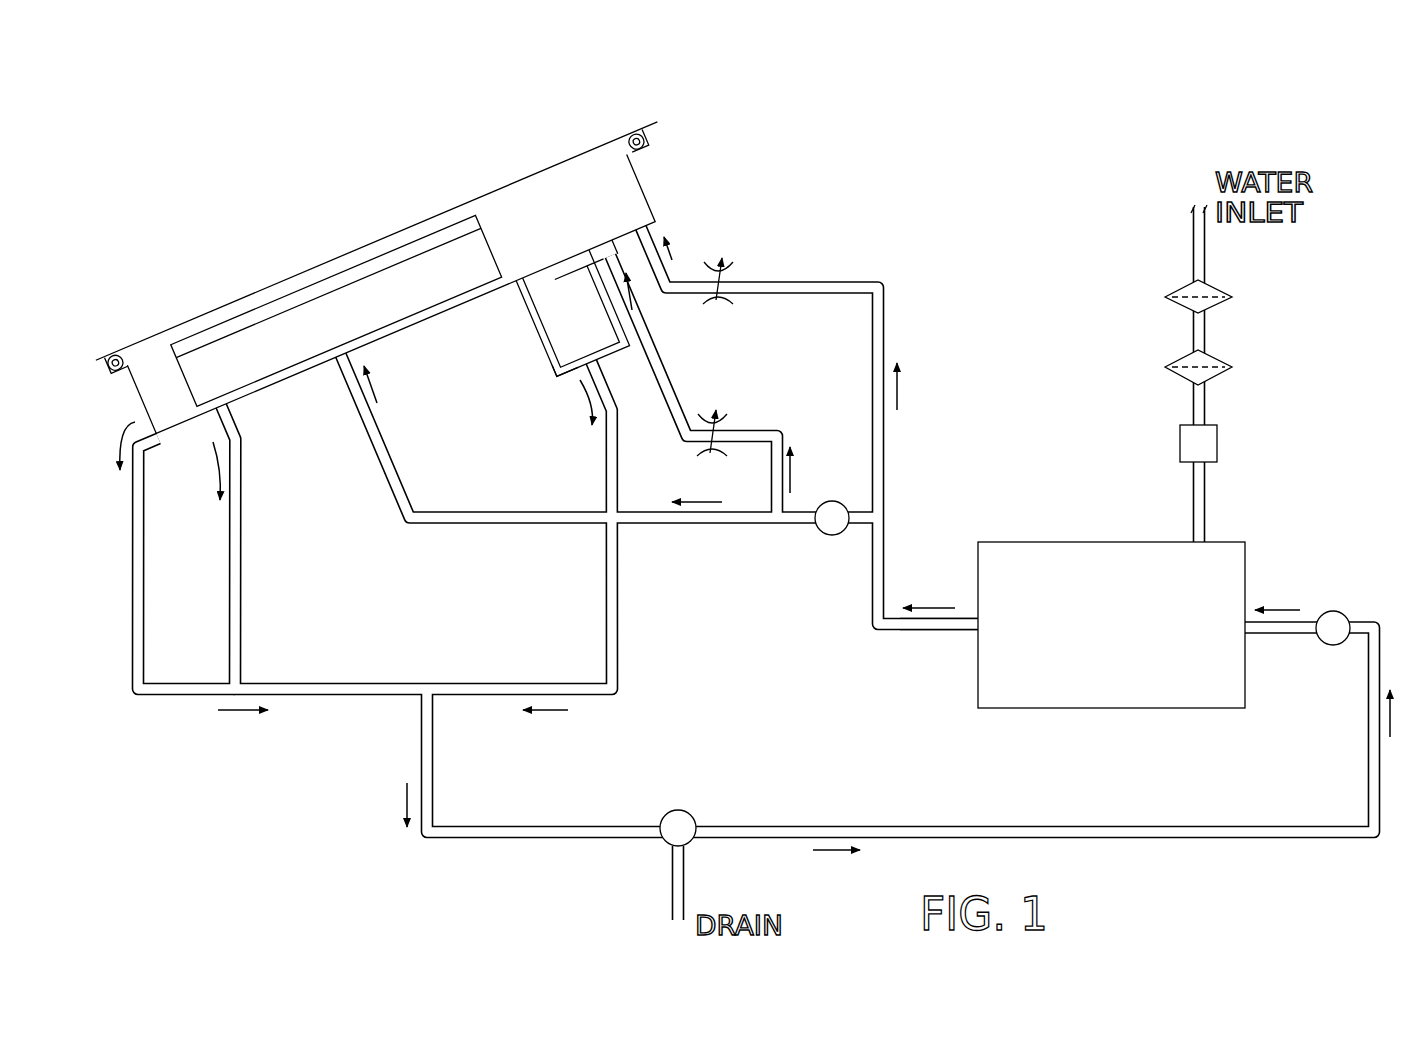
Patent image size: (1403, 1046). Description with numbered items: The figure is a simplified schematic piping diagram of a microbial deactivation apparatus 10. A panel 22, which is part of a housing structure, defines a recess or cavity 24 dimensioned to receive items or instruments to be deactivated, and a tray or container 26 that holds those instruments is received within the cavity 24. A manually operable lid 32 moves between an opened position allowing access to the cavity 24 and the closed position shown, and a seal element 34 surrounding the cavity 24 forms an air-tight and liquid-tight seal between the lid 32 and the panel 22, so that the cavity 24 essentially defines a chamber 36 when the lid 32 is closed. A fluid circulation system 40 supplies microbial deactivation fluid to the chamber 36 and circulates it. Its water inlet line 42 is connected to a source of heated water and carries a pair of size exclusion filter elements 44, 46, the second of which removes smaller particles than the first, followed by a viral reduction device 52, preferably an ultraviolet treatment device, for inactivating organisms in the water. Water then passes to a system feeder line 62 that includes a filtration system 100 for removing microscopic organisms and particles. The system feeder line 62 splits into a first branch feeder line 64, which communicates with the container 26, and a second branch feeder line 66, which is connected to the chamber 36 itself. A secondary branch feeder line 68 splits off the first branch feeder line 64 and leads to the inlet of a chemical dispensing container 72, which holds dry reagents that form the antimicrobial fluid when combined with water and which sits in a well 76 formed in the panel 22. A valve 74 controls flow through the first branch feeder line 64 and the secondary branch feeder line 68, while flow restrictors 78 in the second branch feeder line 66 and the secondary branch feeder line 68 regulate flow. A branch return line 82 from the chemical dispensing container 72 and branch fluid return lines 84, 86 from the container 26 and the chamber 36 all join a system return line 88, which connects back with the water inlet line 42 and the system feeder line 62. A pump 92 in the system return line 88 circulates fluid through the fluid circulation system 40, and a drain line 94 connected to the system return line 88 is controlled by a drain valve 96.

The microbial deactivation apparatus 10 is at (826, 118).
The panel 22 is at (440, 317).
The recess or cavity 24 is at (528, 198).
The tray or container 26 is at (375, 290).
The lid 32 is at (243, 297).
The seal element 34 is at (657, 127).
The chamber 36 is at (490, 212).
The fluid circulation system 40 is at (975, 320).
The water inlet line 42 is at (1193, 238).
The filter element 44 is at (1218, 288).
The filter element 46 is at (1223, 360).
The viral reduction device 52 is at (1218, 437).
The system feeder line 62 is at (917, 630).
The first branch feeder line 64 is at (716, 530).
The second branch feeder line 66 is at (833, 280).
The secondary branch feeder line 68 is at (663, 380).
The chemical dispensing container 72 is at (556, 322).
The valve 74 is at (830, 500).
The well 76 is at (556, 372).
The flow restrictors 78 is at (738, 272).
The branch return line 82 is at (605, 600).
The branch fluid return line 84 is at (242, 612).
The branch fluid return line 86 is at (145, 593).
The system return line 88 is at (567, 825).
The pump 92 is at (1342, 610).
The drain line 94 is at (672, 880).
The drain valve 96 is at (687, 812).
The filtration system 100 is at (1065, 540).